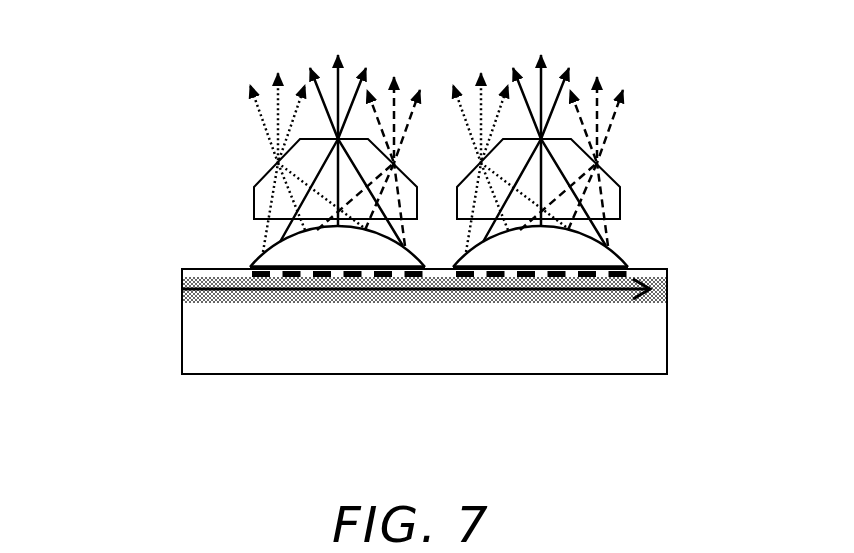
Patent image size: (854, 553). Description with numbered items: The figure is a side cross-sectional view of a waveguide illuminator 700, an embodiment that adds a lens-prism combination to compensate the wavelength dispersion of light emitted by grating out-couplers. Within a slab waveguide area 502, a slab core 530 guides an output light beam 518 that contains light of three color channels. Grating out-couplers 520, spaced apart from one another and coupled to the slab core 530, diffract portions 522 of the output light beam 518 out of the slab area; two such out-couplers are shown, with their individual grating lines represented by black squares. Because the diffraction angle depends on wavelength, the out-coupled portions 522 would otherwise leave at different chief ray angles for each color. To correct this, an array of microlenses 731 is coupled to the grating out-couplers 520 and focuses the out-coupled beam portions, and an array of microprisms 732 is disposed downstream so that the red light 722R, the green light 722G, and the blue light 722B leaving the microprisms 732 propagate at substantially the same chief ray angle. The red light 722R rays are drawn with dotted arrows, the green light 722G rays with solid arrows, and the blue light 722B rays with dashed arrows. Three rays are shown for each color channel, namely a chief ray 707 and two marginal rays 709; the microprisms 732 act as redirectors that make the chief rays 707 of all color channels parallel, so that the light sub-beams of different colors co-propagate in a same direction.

The waveguide illuminator 700 is at (132, 133).
The slab waveguide area 502 is at (468, 349).
The output light beam 518 is at (258, 290).
The grating out-couplers 520 is at (369, 285).
The out-coupled portions of the output light beam 522 is at (254, 232).
The slab core 530 is at (212, 303).
The chief ray 707 is at (546, 69).
The marginal rays 709 is at (520, 77).
The red light beam 722R is at (242, 85).
The green light beam 722G is at (305, 66).
The blue light beam 722B is at (365, 89).
The microlenses 731 is at (618, 257).
The microprisms 732 is at (620, 200).